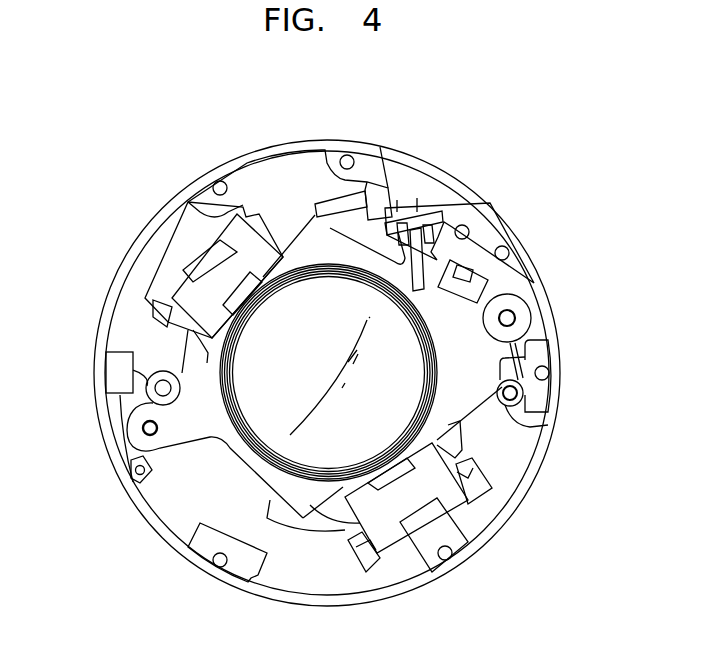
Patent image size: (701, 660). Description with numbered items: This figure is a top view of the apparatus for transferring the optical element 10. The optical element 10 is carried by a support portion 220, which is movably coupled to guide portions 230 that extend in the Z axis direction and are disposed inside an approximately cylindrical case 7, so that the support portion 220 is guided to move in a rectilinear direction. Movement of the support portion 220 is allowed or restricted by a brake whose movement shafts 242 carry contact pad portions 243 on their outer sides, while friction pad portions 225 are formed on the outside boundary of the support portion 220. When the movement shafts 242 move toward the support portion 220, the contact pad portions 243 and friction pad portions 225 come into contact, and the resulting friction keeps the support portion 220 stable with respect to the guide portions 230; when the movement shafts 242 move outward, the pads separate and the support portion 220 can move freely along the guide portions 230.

The case 7 is at (272, 148).
The optical element 10 is at (380, 411).
The support portion 220 is at (228, 463).
The friction pad portions 225 is at (200, 362).
The guide portions 230 is at (142, 430).
The movement shafts 242 is at (152, 378).
The contact pad portions 243 is at (147, 386).